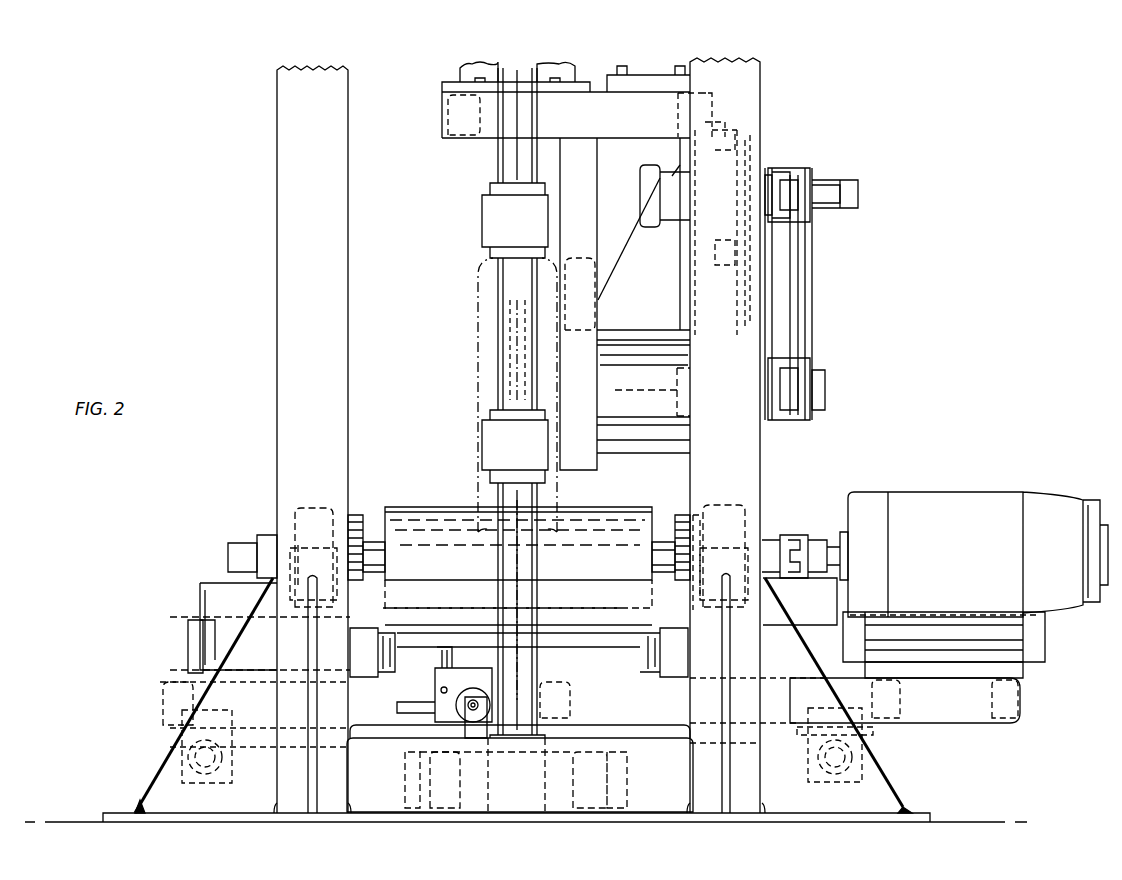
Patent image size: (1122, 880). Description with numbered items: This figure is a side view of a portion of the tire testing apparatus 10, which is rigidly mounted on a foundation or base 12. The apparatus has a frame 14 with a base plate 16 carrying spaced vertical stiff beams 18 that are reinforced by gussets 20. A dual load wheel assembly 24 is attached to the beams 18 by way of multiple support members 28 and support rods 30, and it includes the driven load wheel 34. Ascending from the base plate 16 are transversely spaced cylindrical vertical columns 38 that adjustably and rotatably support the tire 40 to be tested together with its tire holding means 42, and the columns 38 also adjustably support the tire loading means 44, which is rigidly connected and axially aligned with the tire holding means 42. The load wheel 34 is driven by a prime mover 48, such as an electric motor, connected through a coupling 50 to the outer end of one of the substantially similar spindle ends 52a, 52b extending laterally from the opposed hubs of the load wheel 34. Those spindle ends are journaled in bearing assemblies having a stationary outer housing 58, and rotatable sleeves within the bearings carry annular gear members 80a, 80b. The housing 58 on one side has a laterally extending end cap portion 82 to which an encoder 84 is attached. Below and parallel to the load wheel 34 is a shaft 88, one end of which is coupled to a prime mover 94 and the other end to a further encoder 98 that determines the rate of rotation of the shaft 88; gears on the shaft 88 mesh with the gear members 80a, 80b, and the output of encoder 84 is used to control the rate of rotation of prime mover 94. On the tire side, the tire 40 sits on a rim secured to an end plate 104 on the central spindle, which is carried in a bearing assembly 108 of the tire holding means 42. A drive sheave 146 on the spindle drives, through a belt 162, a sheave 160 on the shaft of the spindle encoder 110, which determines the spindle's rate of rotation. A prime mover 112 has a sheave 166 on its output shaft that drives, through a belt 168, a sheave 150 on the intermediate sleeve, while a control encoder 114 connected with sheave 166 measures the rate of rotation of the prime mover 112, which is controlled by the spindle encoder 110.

The apparatus 10 is at (905, 243).
The base 12 is at (58, 822).
The frame 14 is at (300, 142).
The base plate 16 is at (152, 811).
The vertical stiff beams 18 is at (277, 297).
The gussets 20 is at (165, 752).
The dual load wheel assembly 24 is at (430, 490).
The support members 28 is at (205, 640).
The support rods 30 is at (225, 765).
The driven load wheel 34 is at (595, 535).
The cylindrical vertical columns 38 is at (515, 598).
The tire 40 is at (478, 322).
The tire holding means 42 is at (648, 322).
The tire loading means 44 is at (448, 118).
The prime mover 48 is at (950, 520).
The coupling 50 is at (805, 537).
The spindle end 52a is at (668, 540).
The spindle end 52b is at (375, 540).
The stationary outer housing 58 is at (315, 508).
The annular gear member 80a is at (675, 558).
The annular gear member 80b is at (375, 560).
The end cap portion 82 is at (268, 545).
The encoder 84 is at (230, 560).
The shaft 88 is at (580, 640).
The prime mover 94 is at (195, 660).
The encoder 98 is at (777, 650).
The end plate 104 is at (498, 360).
The bearing assembly 108 is at (672, 432).
The spindle encoder 110 is at (858, 190).
The prime mover 112 is at (640, 192).
The control encoder 114 is at (840, 198).
The drive sheave 146 is at (812, 415).
The sheave 150 is at (790, 360).
The sheave 160 is at (815, 178).
The drive member 162 is at (808, 292).
The sheave 166 is at (770, 182).
The drive member 168 is at (780, 258).